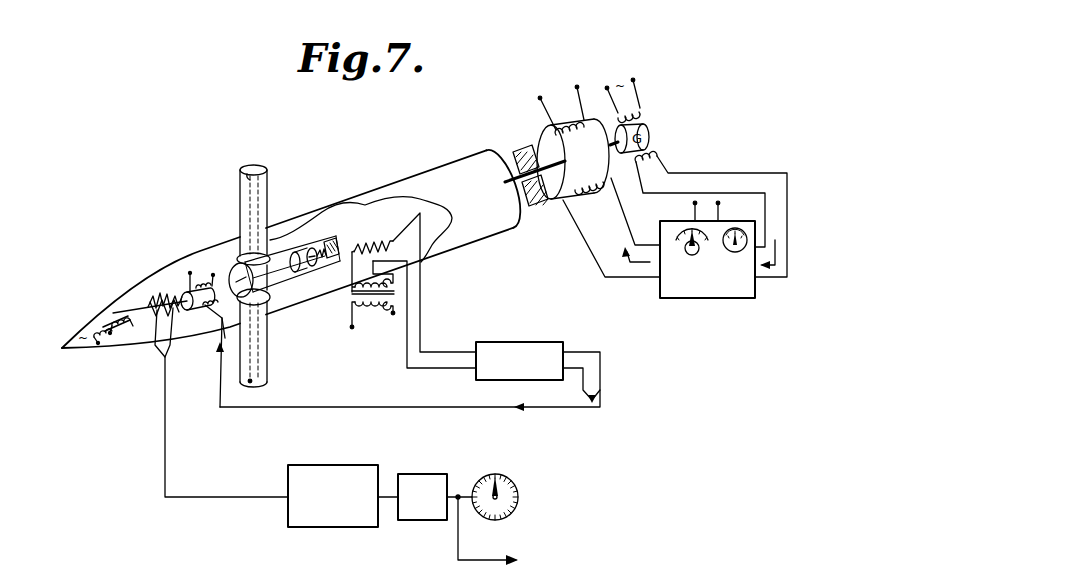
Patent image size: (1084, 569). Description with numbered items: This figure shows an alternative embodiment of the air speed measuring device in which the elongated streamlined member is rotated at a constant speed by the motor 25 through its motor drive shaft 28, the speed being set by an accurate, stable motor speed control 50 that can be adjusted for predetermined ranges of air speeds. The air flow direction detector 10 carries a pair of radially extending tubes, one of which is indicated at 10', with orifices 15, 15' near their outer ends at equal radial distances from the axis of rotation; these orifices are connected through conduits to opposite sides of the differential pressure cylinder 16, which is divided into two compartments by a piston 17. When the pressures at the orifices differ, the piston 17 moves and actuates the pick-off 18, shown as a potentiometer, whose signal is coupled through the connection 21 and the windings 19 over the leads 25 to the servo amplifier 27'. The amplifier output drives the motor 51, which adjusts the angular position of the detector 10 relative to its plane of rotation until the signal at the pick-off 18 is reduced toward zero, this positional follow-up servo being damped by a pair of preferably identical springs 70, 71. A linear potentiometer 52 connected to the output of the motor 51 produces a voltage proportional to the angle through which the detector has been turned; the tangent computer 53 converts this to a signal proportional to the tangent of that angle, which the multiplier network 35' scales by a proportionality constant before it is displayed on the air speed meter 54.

The air flow direction detector 10 is at (274, 209).
The lower vertical cylinder 10' is at (284, 326).
The orifice 15 is at (224, 193).
The orifice 15' is at (265, 392).
The differential pressure cylinder 16 is at (322, 221).
The piston 17 is at (318, 273).
The pick-off 18 is at (372, 236).
The transformer 19 is at (372, 264).
The connection 21 is at (365, 238).
The motor 25 is at (418, 343).
The servo amplifier 27' is at (519, 344).
The motor drive shaft 28 is at (556, 199).
The multiplier network 35' is at (422, 477).
The motor speed control 50 is at (727, 299).
The motor 51 is at (176, 263).
The linear potentiometer 52 is at (134, 296).
The tangent computer 53 is at (347, 452).
The meter 54 is at (498, 474).
The spring 70 is at (299, 272).
The spring 71 is at (332, 262).